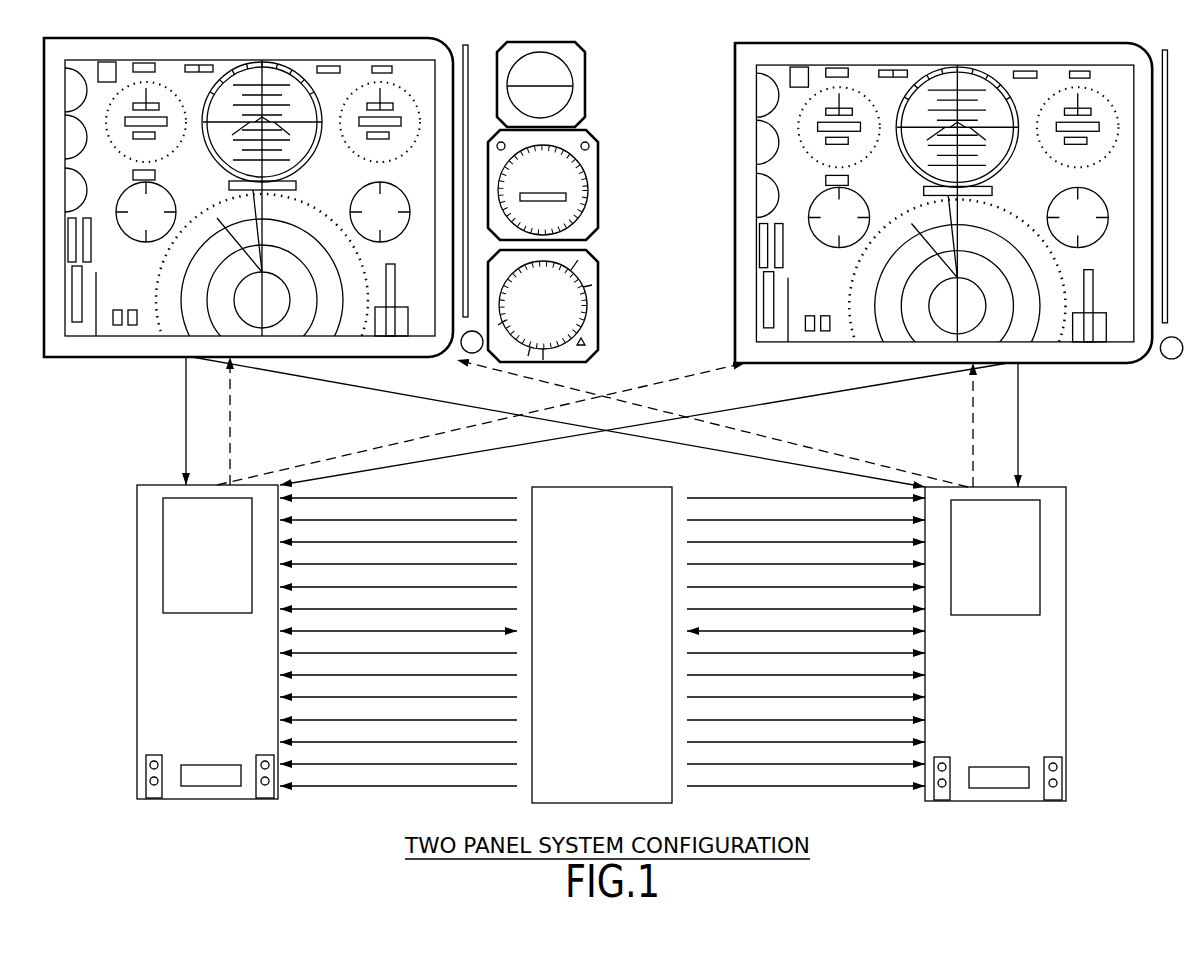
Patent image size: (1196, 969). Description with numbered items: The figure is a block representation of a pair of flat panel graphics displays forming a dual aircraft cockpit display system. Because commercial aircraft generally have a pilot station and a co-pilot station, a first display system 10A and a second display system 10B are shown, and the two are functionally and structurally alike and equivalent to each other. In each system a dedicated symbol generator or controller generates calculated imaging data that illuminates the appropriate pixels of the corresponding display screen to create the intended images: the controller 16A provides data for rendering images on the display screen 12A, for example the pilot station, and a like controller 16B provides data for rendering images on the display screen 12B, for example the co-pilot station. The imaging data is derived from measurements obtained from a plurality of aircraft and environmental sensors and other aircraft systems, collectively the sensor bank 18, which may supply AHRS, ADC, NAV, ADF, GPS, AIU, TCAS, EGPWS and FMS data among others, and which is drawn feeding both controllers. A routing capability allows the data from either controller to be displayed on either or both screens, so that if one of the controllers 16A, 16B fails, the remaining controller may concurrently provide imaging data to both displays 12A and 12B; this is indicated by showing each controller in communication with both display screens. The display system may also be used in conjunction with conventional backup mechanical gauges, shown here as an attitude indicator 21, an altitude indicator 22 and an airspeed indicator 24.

The first display system 10A is at (110, 438).
The second display system 10B is at (1108, 443).
The display screen 12A is at (78, 360).
The display screen 12B is at (737, 232).
The controller 16A is at (137, 694).
The controller 16B is at (1066, 697).
The sensor bank 18 is at (673, 803).
The attitude indicator 21 is at (586, 90).
The altitude indicator 22 is at (598, 170).
The airspeed indicator 24 is at (598, 298).